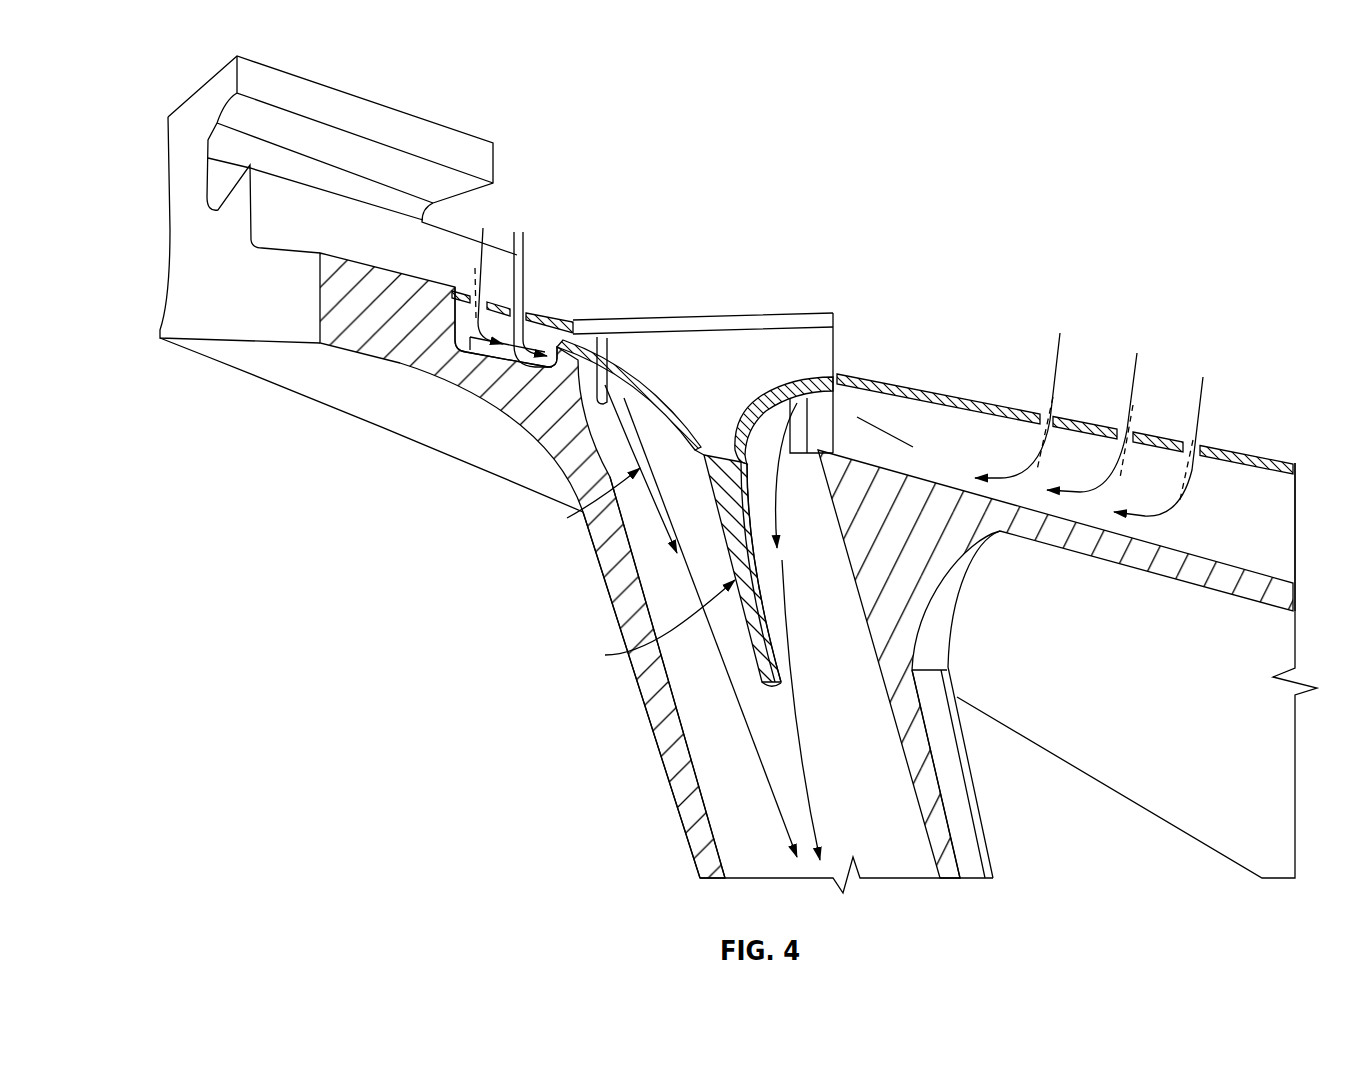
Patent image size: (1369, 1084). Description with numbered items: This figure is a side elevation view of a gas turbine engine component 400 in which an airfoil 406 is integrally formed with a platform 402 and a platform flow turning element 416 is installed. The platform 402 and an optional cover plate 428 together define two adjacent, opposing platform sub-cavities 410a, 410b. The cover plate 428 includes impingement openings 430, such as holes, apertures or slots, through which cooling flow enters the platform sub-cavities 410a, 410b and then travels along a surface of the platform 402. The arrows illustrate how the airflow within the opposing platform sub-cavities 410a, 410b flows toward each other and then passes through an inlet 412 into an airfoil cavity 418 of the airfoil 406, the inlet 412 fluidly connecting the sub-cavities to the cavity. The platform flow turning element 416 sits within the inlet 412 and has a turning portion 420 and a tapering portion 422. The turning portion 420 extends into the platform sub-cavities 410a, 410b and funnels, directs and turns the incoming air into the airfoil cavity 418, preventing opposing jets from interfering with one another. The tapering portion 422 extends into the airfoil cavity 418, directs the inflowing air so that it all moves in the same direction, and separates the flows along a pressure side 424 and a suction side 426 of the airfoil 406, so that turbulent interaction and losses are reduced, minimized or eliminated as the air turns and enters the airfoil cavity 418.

The gas turbine engine component 400 is at (142, 77).
The platform 402 is at (160, 338).
The airfoil 406 is at (657, 768).
The platform sub-cavity 410a is at (452, 293).
The platform sub-cavity 410b is at (1263, 537).
The inlet 412 is at (583, 512).
The platform flow turning element 416 is at (708, 465).
The airfoil cavity 418 is at (860, 791).
The turning portion 420 is at (625, 380).
The tapering portion 422 is at (647, 626).
The pressure side 424 is at (703, 822).
The suction side 426 is at (942, 833).
The cover plate 428 is at (549, 313).
The impingement opening 430 is at (488, 294).